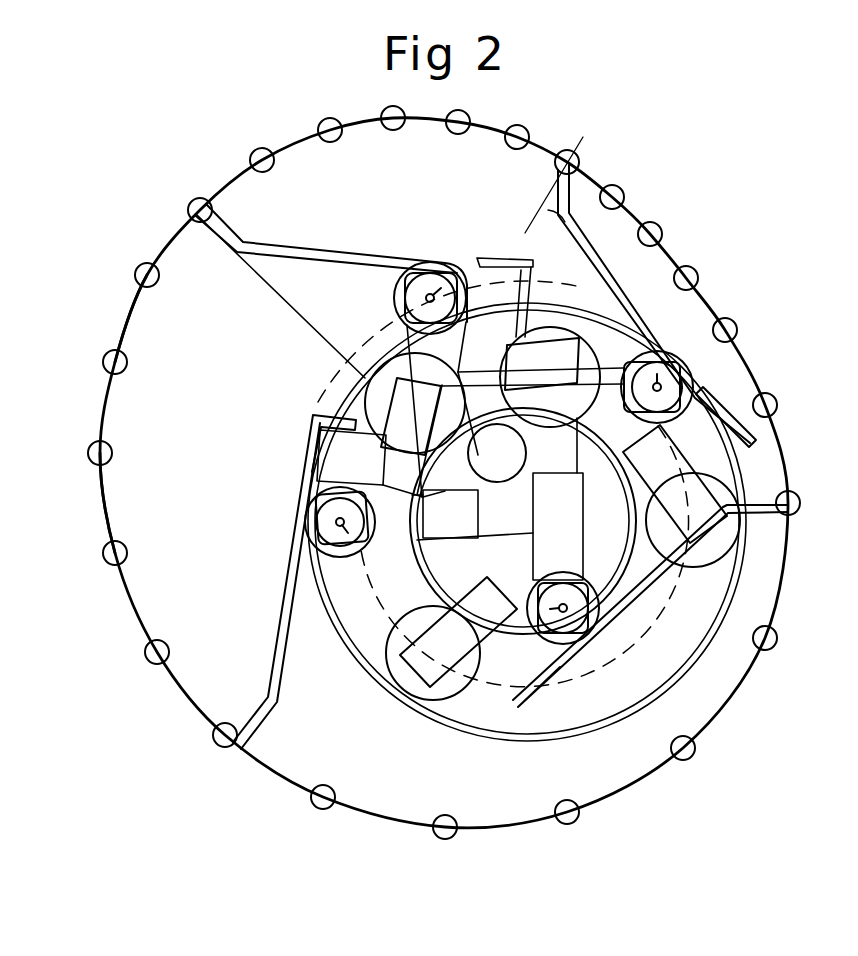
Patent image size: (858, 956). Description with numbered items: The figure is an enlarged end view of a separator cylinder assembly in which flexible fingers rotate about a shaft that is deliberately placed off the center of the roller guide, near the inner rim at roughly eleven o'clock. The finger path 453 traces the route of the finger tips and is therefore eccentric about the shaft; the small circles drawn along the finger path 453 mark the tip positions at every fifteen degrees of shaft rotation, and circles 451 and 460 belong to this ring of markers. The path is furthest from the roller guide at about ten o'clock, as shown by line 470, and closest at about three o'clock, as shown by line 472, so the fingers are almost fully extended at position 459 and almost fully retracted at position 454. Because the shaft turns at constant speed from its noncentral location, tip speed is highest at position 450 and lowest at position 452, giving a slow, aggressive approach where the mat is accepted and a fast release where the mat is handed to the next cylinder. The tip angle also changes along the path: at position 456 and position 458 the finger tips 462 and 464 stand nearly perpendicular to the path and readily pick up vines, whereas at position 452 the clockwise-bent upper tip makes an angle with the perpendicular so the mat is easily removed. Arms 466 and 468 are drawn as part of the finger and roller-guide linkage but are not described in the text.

The position 450 is at (740, 687).
The mounting hole 451 is at (720, 320).
The position 452 is at (557, 172).
The finger path 453 is at (133, 306).
The position 454 is at (814, 500).
The position 456 is at (202, 743).
The position 458 is at (177, 205).
The position 459 is at (101, 494).
The bolt holes 460 is at (620, 793).
The finger tip 462 is at (252, 712).
The finger tip 464 is at (225, 228).
The pivot arm 466 is at (555, 187).
The connecting arm 468 is at (768, 513).
The line 470 is at (267, 290).
The line 472 is at (740, 490).